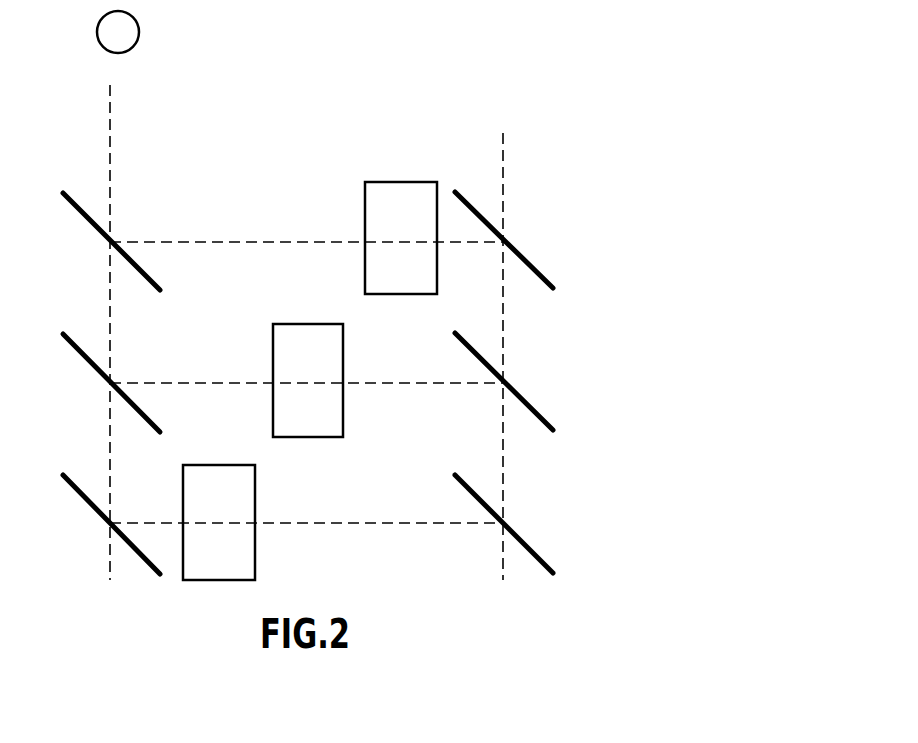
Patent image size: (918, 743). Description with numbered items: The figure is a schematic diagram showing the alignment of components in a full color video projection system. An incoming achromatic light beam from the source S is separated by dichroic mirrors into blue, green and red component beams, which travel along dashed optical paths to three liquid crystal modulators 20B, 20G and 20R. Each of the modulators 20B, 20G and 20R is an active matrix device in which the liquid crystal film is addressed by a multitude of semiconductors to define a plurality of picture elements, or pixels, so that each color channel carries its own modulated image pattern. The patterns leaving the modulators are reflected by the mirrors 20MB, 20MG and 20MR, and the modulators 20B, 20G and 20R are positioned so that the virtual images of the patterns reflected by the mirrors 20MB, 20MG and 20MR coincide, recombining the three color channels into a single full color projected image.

The source S is at (118, 32).
The liquid crystal modulator 20B is at (398, 170).
The liquid crystal modulator 20G is at (298, 312).
The liquid crystal modulator 20R is at (214, 452).
The mirror 20MB is at (555, 260).
The mirror 20MG is at (552, 396).
The mirror 20MR is at (552, 540).